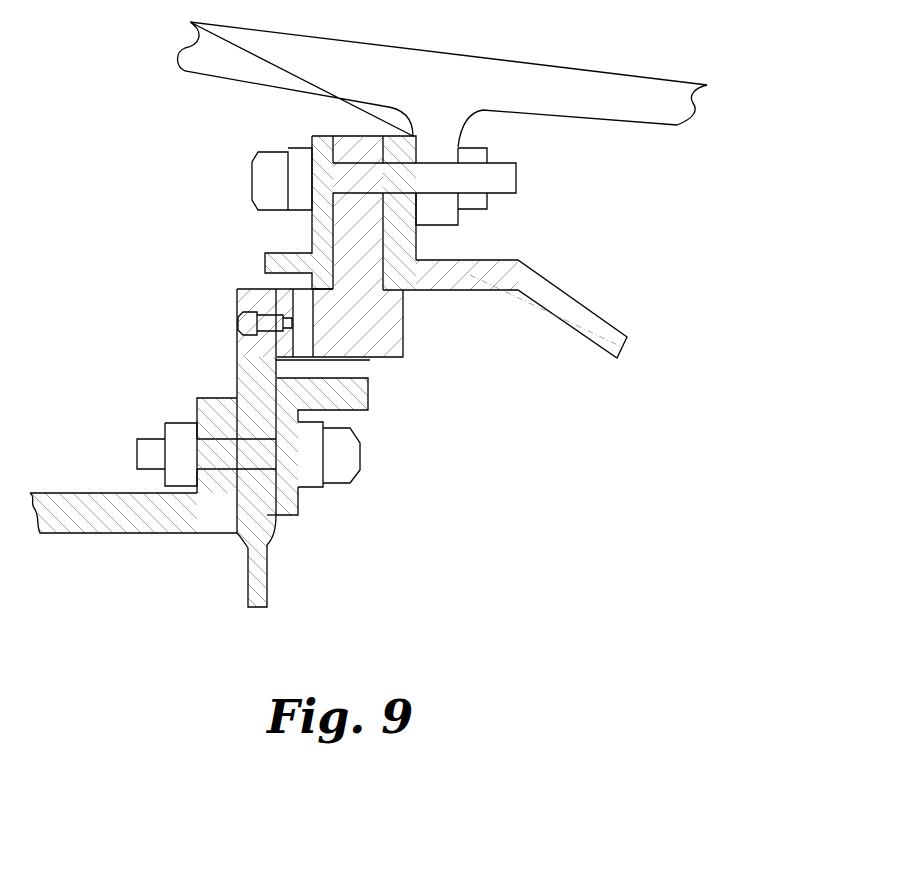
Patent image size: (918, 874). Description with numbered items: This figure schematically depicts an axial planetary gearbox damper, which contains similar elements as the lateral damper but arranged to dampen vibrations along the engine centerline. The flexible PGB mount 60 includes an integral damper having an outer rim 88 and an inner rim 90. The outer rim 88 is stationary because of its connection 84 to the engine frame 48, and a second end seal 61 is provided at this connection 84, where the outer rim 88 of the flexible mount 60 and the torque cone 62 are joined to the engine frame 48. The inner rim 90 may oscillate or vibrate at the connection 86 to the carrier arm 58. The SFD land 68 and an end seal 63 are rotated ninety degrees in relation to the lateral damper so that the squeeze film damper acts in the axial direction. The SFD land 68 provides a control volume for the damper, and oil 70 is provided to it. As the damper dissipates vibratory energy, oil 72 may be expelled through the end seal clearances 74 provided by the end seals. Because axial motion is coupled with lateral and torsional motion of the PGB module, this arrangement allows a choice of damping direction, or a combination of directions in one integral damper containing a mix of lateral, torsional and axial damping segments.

The engine frame 48 is at (533, 75).
The carrier arm 58 is at (67, 535).
The flexible PGB mount 60 is at (267, 577).
The second end seal 61 is at (325, 143).
The torque cone 62 is at (562, 308).
The end seal 63 is at (300, 510).
The SFD land 68 is at (345, 347).
The oil 70 is at (218, 322).
The oil 72 is at (277, 281).
The end seal clearances 74 is at (110, 240).
The connection 84 is at (236, 148).
The connection 86 is at (138, 428).
The outer rim 88 is at (392, 302).
The inner rim 90 is at (270, 517).